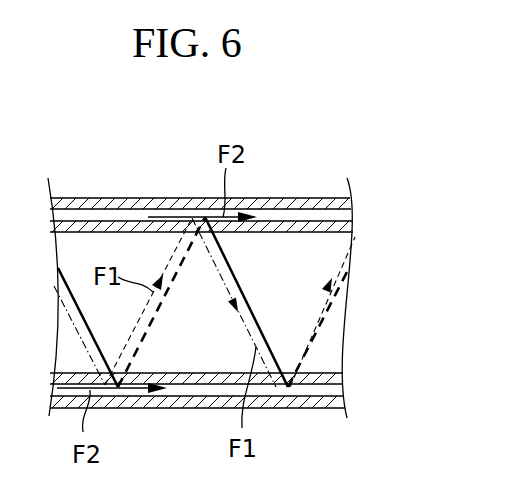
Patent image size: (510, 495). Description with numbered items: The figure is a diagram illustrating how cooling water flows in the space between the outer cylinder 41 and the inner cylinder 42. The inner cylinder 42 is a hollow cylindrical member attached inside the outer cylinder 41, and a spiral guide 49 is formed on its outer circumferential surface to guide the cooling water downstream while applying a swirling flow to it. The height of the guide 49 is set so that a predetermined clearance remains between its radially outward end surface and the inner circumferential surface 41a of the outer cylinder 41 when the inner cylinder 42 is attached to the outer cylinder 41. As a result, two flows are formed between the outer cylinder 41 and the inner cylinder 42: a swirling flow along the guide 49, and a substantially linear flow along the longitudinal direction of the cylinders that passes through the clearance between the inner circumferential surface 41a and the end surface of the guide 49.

The outer cylinder 41 is at (117, 198).
The inner circumferential surface of the outer cylinder 41a is at (338, 214).
The inner cylinder 42 is at (302, 225).
The spiral guide 49 is at (236, 280).